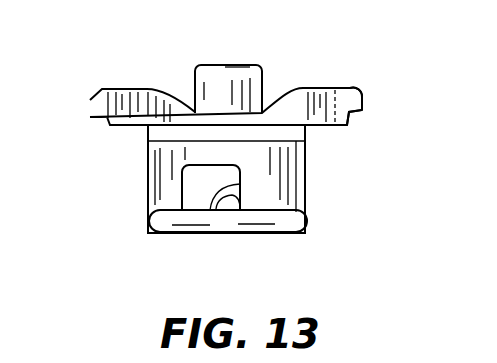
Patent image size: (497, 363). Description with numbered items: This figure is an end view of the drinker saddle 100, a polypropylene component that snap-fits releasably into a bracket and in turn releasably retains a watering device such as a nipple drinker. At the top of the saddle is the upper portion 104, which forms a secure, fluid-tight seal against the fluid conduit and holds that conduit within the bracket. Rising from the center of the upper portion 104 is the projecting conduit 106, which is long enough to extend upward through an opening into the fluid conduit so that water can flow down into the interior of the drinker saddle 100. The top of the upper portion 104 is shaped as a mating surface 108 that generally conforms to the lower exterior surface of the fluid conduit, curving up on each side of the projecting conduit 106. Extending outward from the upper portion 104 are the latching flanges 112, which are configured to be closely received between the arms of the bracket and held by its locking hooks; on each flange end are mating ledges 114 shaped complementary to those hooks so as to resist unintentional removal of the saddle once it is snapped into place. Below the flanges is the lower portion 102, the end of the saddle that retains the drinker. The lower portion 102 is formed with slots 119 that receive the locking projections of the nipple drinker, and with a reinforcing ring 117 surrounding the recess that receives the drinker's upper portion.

The drinker saddle 100 is at (122, 192).
The lower portion 102 is at (310, 193).
The upper portion 104 is at (96, 88).
The projecting conduit 106 is at (240, 76).
The mating surface 108 is at (288, 98).
The latching flanges 112 is at (358, 100).
The mating ledges 114 is at (352, 114).
The reinforcing ring 117 is at (283, 222).
The slots 119 is at (213, 188).